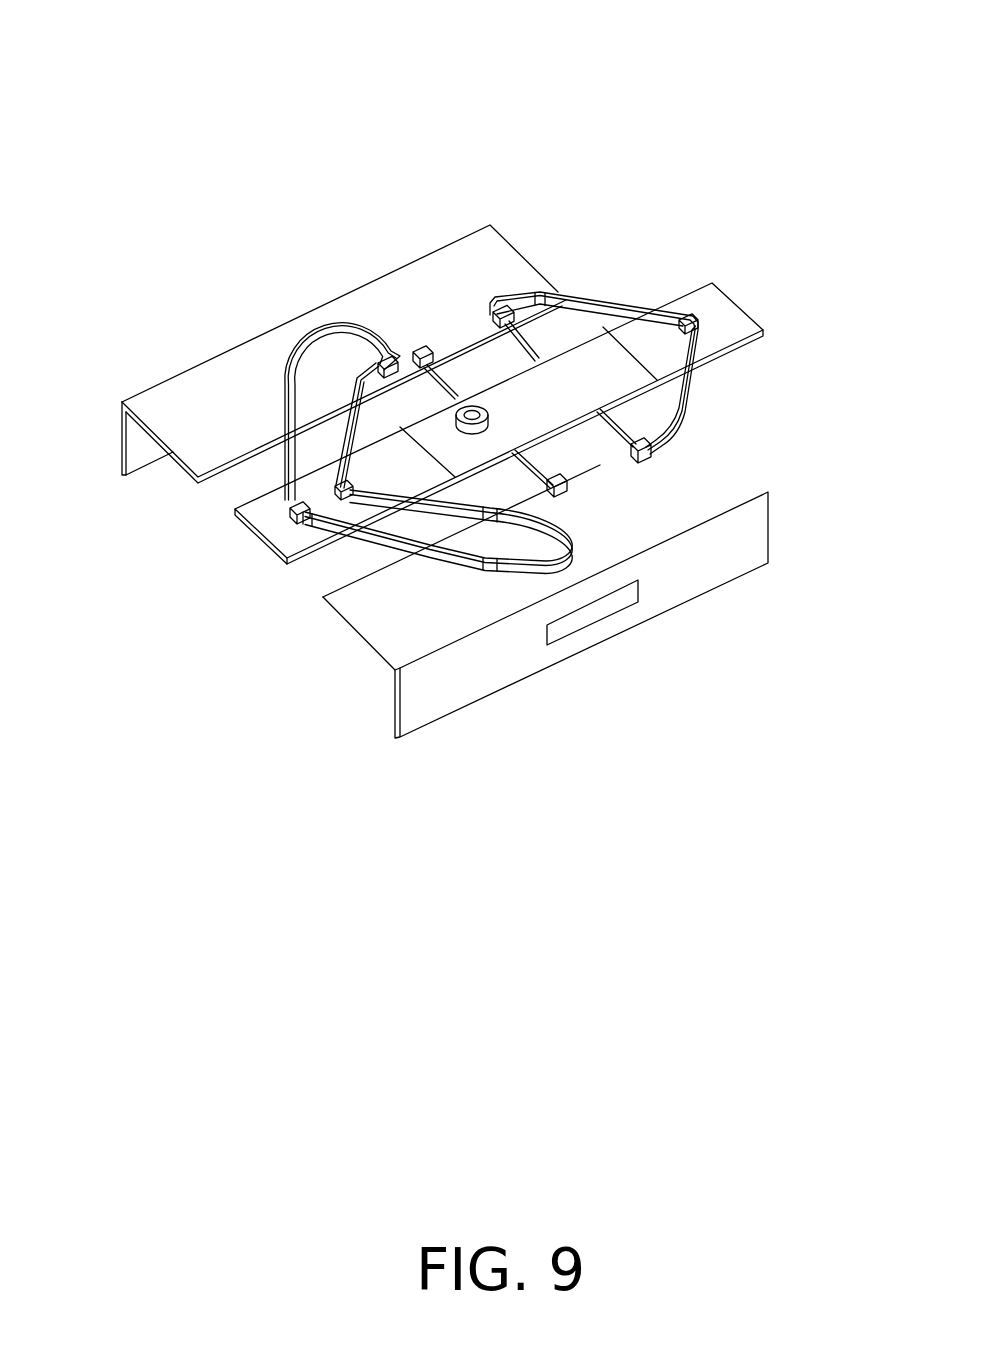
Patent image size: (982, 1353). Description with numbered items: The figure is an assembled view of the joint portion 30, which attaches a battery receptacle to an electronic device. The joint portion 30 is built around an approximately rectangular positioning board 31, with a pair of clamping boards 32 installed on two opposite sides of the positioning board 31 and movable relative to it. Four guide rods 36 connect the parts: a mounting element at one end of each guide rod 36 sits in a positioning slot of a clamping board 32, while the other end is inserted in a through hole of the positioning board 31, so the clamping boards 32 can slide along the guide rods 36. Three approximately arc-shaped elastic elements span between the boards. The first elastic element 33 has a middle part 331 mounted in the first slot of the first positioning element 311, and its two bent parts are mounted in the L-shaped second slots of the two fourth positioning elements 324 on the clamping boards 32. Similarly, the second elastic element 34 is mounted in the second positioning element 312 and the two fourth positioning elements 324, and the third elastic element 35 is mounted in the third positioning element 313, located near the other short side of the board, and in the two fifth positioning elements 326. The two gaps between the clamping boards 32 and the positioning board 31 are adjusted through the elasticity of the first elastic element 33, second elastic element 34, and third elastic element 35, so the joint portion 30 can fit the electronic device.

The joint portion 30 is at (183, 58).
The positioning board 31 is at (730, 313).
The first positioning element 311 is at (287, 511).
The second positioning element 312 is at (337, 500).
The third positioning element 313 is at (688, 325).
The clamping boards 32 is at (200, 402).
The fourth positioning element 324 is at (392, 345).
The fifth positioning element 326 is at (655, 465).
The first elastic element 33 is at (287, 393).
The middle part 331 is at (312, 527).
The second elastic element 34 is at (357, 375).
The third elastic element 35 is at (614, 298).
The guide rod 36 is at (567, 490).